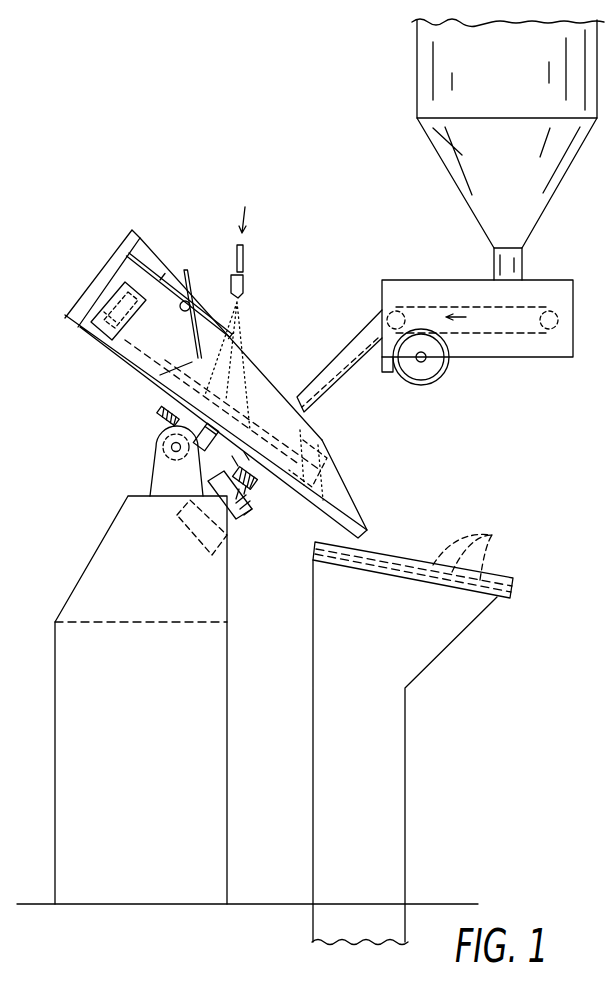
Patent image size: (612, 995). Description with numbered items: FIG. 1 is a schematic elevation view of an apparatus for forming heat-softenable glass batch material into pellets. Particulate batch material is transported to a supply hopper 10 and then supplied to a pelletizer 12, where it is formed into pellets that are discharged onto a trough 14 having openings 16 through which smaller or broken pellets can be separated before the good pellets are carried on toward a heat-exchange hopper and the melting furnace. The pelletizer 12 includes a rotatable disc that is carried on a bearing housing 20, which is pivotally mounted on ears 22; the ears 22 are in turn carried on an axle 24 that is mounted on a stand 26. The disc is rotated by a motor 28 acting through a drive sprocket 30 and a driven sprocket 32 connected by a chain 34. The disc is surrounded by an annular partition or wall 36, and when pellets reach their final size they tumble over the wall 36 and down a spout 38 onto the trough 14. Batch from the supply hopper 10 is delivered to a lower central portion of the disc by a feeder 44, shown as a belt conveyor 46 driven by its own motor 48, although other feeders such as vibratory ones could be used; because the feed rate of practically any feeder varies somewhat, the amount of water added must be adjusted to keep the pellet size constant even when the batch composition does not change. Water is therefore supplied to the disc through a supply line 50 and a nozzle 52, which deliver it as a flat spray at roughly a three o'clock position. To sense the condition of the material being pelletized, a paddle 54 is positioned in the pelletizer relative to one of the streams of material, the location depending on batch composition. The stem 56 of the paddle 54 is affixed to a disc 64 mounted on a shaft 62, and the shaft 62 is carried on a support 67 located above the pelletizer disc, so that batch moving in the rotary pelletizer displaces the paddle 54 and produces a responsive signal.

The supply hopper 10 is at (500, 83).
The pelletizer 12 is at (195, 218).
The trough 14 is at (427, 718).
The openings 16 is at (500, 538).
The bearing housing 20 is at (160, 402).
The ears 22 is at (160, 460).
The axle 24 is at (172, 447).
The stand 26 is at (105, 537).
The motor 28 is at (227, 542).
The drive sprocket 30 is at (236, 512).
The driven sprocket 32 is at (162, 413).
The chain 34 is at (250, 487).
The annular partition or wall 36 is at (241, 393).
The spout 38 is at (348, 488).
The feeder 44 is at (466, 303).
The belt conveyor 46 is at (457, 307).
The motor 48 is at (446, 368).
The supply line 50 is at (244, 247).
The nozzle 52 is at (244, 280).
The paddle 54 is at (160, 378).
The stem 56 is at (188, 277).
The shaft 62 is at (126, 346).
The disc 64 is at (180, 298).
The support 67 is at (139, 253).